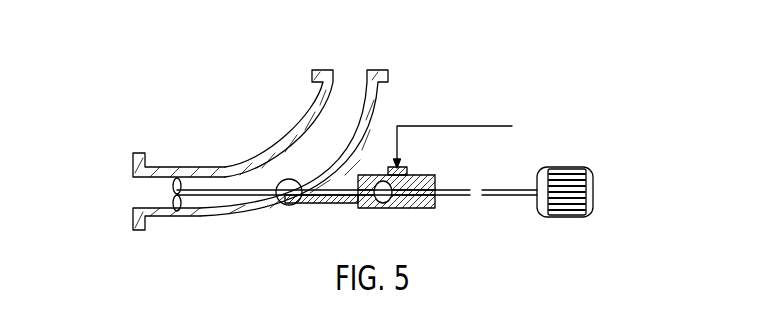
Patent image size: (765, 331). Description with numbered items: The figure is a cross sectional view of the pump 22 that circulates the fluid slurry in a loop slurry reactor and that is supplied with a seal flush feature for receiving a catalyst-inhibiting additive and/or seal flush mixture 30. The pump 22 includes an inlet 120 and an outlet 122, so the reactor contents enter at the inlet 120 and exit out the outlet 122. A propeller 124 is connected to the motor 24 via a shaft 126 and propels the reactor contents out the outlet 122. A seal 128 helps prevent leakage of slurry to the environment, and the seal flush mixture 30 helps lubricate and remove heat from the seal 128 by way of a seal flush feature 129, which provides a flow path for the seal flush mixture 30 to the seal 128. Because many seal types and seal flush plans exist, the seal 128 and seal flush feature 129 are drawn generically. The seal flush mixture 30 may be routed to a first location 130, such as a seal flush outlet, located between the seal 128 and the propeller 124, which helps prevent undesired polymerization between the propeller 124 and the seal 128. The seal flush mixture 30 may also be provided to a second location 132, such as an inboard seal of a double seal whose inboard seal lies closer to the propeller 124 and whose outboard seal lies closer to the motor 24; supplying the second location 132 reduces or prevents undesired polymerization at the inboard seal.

The pump 22 is at (519, 43).
The motor 24 is at (594, 183).
The seal flush mixture 30 is at (463, 125).
The inlet 120 is at (118, 191).
The outlet 122 is at (357, 62).
The propeller 124 is at (180, 210).
The shaft 126 is at (242, 187).
The seal 128 is at (409, 202).
The seal flush feature 129 is at (403, 170).
The first location (seal flush outlet) 130 is at (291, 206).
The second location (inboard seal) 132 is at (383, 205).